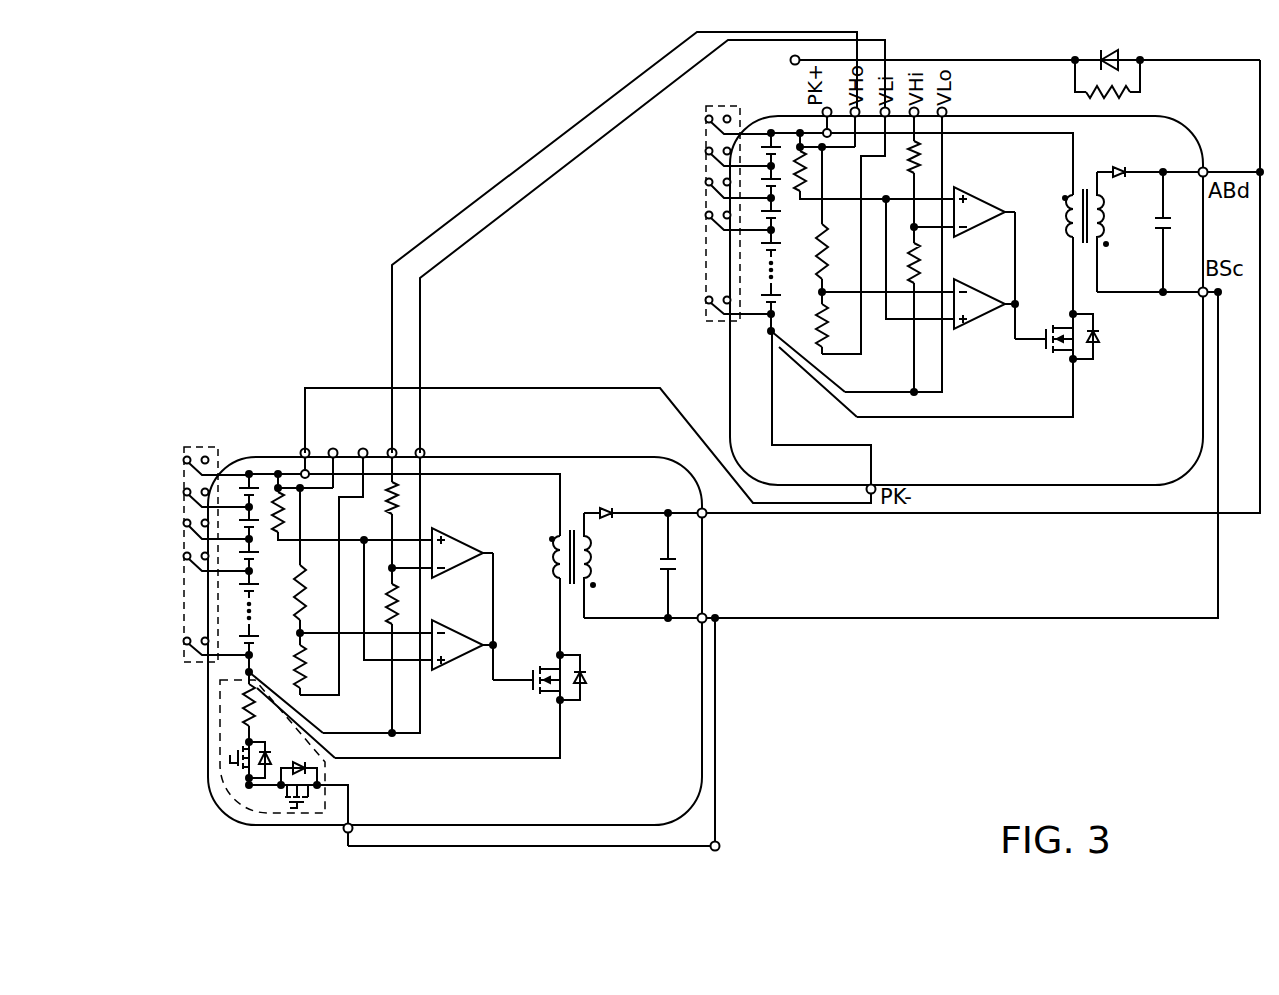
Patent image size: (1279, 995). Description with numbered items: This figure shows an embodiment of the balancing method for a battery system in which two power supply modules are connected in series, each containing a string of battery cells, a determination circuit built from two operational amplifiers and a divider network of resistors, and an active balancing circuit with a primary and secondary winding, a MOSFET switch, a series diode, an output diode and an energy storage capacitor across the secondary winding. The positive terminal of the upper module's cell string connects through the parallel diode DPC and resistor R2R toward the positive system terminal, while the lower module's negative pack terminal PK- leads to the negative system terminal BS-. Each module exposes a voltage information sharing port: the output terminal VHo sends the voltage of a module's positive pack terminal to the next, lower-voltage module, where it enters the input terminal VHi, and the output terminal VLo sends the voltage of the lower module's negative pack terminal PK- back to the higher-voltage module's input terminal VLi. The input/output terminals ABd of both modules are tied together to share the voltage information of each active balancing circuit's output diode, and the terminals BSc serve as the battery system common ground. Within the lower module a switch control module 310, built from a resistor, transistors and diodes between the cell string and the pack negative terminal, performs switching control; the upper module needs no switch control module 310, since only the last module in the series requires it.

The switch control module 310 is at (220, 736).
The diode DPC is at (1131, 51).
The resistor R2R is at (1121, 88).
The terminal PK- is at (326, 837).
The voltage information output terminal VHo is at (334, 447).
The voltage information input terminal VLi is at (338, 556).
The voltage information input terminal VHi is at (394, 447).
The voltage information output terminal VLo is at (378, 571).
The voltage information input/output terminal ABd is at (981, 301).
The battery system common terminal BSc is at (960, 456).
The external terminal BS- is at (553, 740).